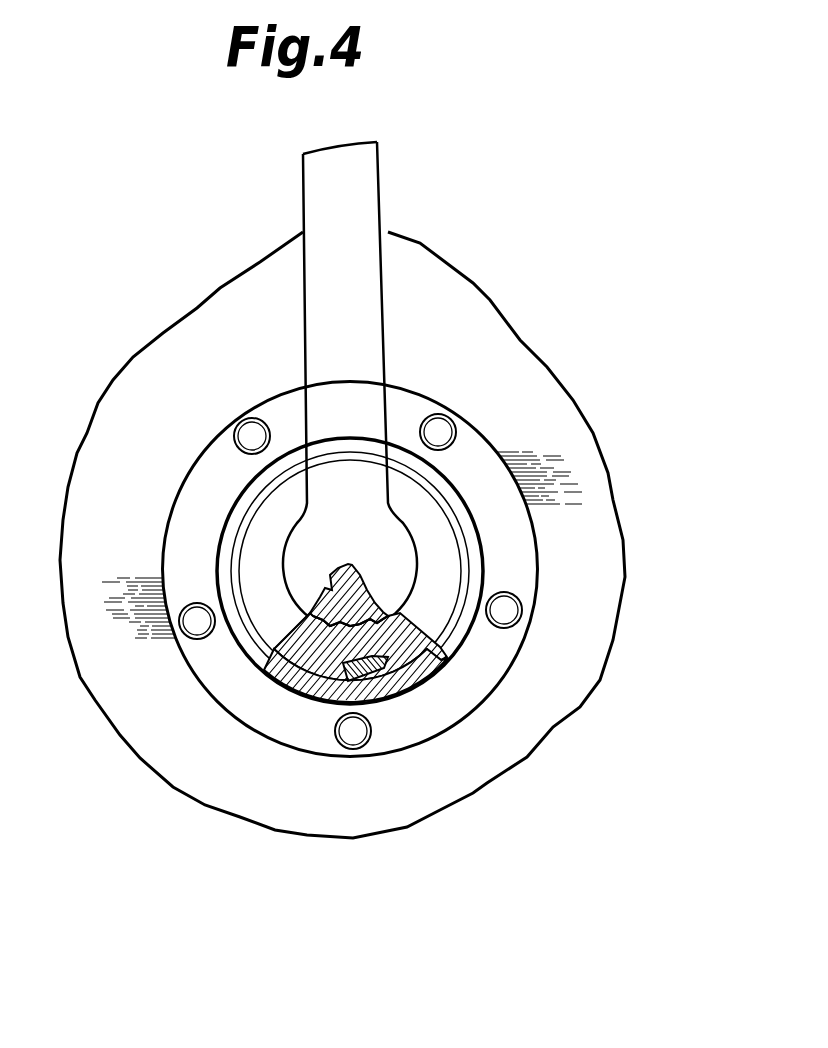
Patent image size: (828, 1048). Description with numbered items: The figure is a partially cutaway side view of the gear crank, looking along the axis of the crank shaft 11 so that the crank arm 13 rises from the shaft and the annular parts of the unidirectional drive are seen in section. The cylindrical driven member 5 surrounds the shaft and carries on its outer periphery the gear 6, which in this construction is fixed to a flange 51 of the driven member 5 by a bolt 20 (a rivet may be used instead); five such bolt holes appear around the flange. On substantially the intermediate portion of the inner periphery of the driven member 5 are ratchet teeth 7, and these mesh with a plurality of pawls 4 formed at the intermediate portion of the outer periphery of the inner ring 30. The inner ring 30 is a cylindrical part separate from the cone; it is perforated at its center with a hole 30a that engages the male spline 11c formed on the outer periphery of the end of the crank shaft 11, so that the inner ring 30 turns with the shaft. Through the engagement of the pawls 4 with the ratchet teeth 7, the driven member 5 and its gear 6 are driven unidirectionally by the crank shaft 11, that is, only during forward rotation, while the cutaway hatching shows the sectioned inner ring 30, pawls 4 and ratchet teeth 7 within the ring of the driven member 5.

The pawls 4 is at (378, 685).
The driven member 5 is at (433, 660).
The gear 6 is at (590, 455).
The ratchet teeth 7 is at (413, 672).
The crank shaft 11 is at (335, 572).
The male spline 11c is at (373, 607).
The crank arm 13 is at (363, 275).
The bolt 20 is at (443, 430).
The inner ring 30 is at (303, 678).
The hole 30a is at (405, 675).
The flange 51 is at (510, 552).